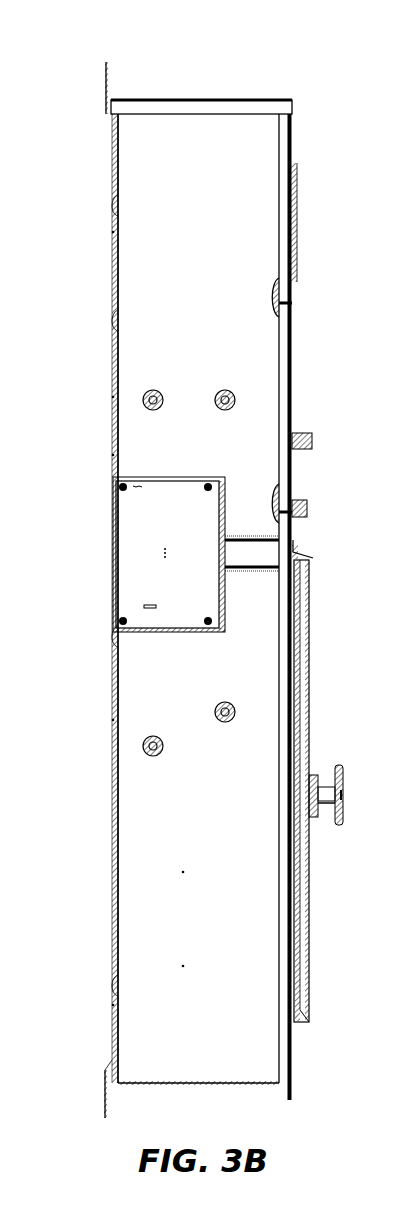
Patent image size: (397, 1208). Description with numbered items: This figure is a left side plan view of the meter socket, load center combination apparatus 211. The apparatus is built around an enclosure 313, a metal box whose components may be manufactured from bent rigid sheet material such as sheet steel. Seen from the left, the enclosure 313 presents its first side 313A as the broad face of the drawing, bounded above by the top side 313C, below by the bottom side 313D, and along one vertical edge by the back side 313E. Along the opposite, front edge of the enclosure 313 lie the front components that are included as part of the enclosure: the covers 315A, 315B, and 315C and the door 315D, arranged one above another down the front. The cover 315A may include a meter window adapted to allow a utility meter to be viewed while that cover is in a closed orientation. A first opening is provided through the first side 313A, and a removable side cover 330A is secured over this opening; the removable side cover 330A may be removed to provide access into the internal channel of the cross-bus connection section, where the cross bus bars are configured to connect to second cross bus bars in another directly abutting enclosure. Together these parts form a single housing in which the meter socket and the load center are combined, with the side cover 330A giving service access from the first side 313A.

The meter socket, load center combination apparatus 211 is at (233, 101).
The enclosure 313 is at (116, 747).
The first side 313A is at (238, 418).
The top side 313C is at (203, 98).
The bottom side 313D is at (243, 1086).
The back side 313E is at (110, 368).
The cover 315A is at (285, 143).
The cover 315B is at (287, 364).
The cover 315C is at (286, 1045).
The door 315D is at (302, 852).
The removable side cover 330A is at (141, 565).